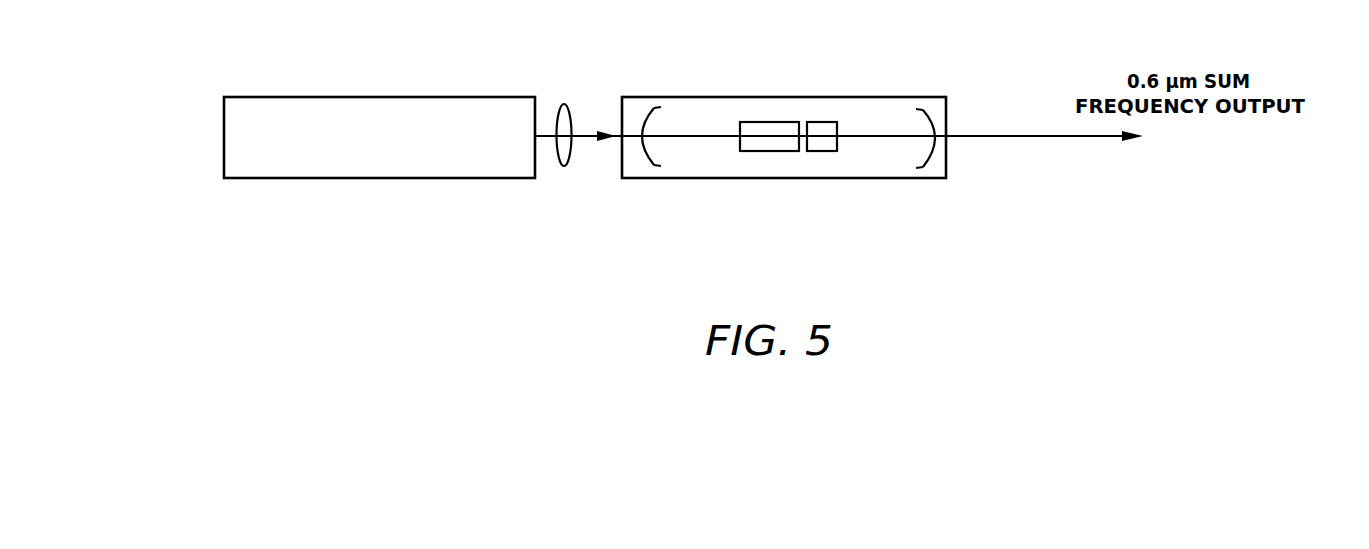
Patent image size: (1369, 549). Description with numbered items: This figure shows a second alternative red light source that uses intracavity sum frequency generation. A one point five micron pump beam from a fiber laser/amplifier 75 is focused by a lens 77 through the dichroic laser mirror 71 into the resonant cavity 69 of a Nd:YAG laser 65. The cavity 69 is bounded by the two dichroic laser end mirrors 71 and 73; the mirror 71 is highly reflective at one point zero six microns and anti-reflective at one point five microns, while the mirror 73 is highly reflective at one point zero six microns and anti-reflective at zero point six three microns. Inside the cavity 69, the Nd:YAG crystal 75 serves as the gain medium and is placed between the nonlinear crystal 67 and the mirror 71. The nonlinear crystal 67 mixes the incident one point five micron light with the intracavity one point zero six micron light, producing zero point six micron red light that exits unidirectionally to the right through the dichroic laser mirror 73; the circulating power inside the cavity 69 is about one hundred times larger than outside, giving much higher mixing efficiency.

The Nd:YAG crystal / 1.5 micron fiber laser/amplifier 75 is at (520, 97).
The lens 77 is at (566, 104).
The resonant cavity 69 is at (688, 126).
The Nd:YAG laser 65 is at (808, 97).
The dichroic laser mirror 71 is at (642, 147).
The nonlinear crystal 67 is at (827, 151).
The dichroic laser mirror 73 is at (944, 155).